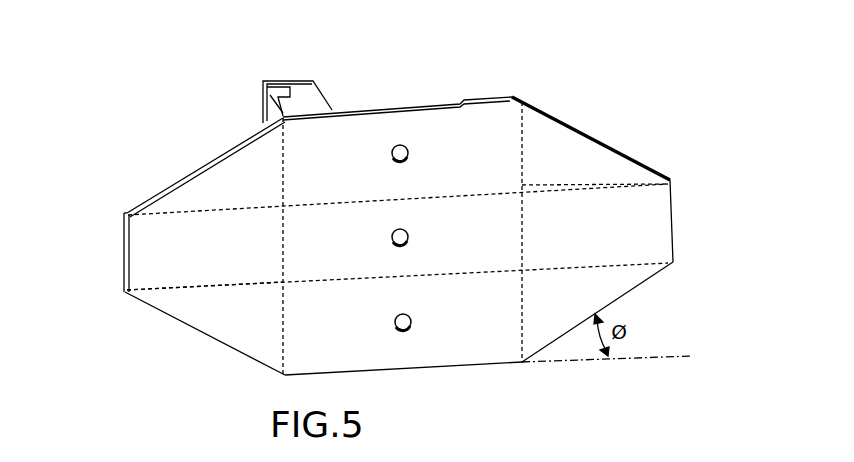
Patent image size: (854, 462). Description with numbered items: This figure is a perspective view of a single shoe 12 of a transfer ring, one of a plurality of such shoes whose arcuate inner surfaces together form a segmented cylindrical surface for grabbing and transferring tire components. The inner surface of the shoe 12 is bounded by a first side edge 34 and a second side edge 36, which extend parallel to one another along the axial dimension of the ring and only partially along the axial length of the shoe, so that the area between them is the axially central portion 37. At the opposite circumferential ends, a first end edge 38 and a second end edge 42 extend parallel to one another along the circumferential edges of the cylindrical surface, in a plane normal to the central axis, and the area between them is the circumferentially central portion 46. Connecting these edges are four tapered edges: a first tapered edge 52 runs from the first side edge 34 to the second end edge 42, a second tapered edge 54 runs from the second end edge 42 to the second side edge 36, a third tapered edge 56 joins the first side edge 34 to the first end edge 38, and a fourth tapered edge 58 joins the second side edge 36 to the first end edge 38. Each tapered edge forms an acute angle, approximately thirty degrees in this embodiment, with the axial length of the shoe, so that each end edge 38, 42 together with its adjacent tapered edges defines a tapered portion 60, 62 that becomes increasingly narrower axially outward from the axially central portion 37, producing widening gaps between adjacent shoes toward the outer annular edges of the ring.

The shoe 12 is at (257, 223).
The first side edge 34 is at (367, 111).
The second side edge 36 is at (412, 372).
The axially central portion 37 is at (283, 277).
The first end edge 38 is at (127, 268).
The second end edge 42 is at (673, 220).
The circumferentially central portion 46 is at (566, 189).
The first tapered edge 52 is at (633, 160).
The second tapered edge 54 is at (630, 292).
The third tapered edge 56 is at (167, 189).
The fourth tapered edge 58 is at (172, 317).
The tapered portion 60 is at (262, 158).
The tapered portion 62 is at (557, 121).